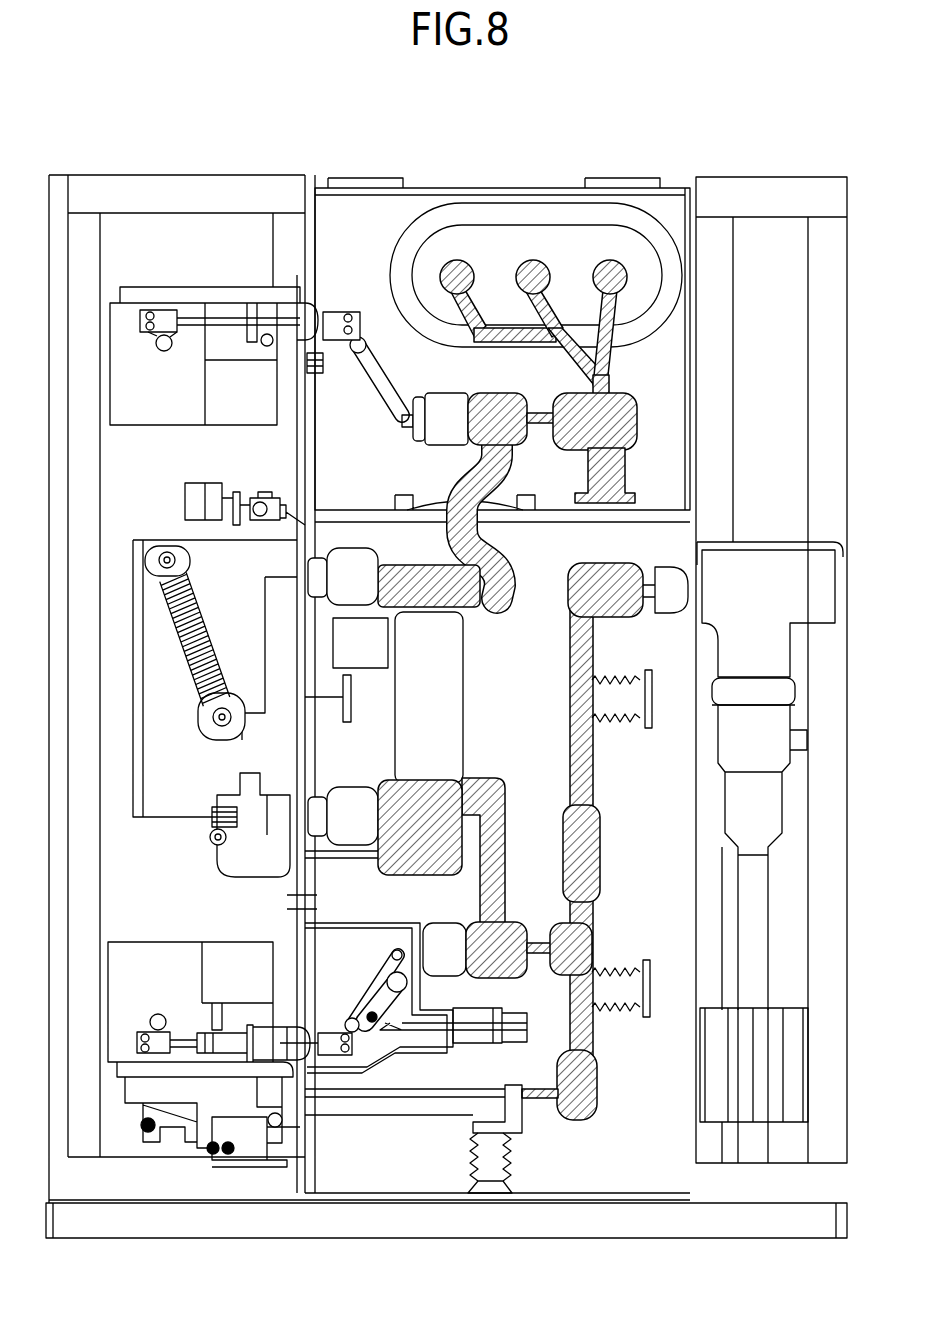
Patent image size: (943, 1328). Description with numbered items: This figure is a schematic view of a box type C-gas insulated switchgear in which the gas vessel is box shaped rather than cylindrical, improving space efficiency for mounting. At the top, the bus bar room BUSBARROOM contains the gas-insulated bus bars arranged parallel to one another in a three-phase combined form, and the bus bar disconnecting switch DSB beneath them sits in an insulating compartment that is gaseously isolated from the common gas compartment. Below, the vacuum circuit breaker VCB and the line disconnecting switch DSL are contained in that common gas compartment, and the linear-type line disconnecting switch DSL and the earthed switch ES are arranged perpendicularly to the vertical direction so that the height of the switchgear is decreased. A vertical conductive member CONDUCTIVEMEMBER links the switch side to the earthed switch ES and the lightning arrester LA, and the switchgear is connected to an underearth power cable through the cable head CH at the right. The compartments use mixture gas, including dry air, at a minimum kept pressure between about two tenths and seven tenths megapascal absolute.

The bus bar room BUSBARROOM is at (350, 200).
The bus bar disconnecting switch DSB is at (480, 455).
The vacuum circuit breaker VCB is at (405, 736).
The conductive member CONDUCTIVEMEMBER is at (625, 814).
The line disconnecting switch DSL is at (491, 932).
The earthed switch ES is at (557, 964).
The lightning arrester LA is at (451, 1121).
The cable head CH is at (770, 852).